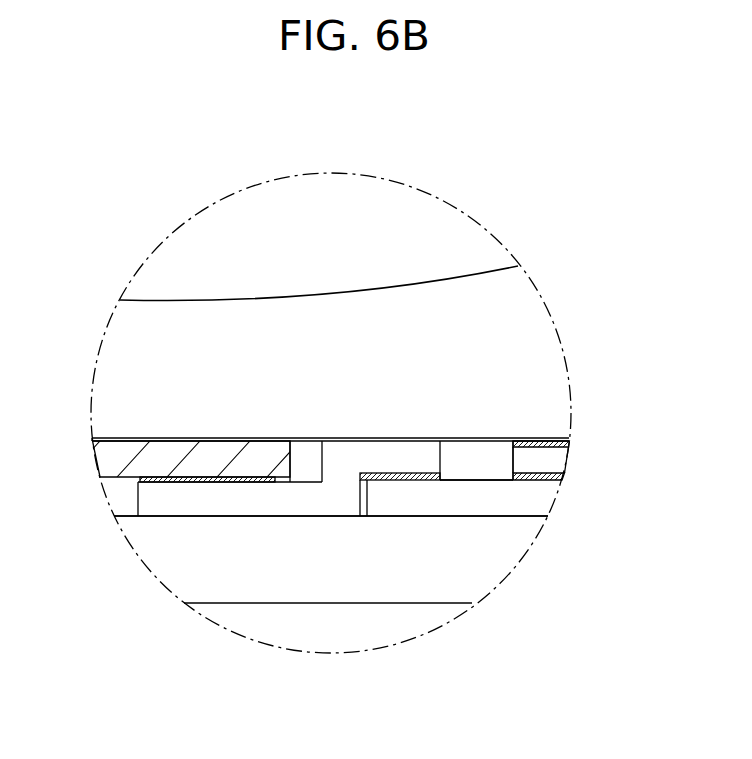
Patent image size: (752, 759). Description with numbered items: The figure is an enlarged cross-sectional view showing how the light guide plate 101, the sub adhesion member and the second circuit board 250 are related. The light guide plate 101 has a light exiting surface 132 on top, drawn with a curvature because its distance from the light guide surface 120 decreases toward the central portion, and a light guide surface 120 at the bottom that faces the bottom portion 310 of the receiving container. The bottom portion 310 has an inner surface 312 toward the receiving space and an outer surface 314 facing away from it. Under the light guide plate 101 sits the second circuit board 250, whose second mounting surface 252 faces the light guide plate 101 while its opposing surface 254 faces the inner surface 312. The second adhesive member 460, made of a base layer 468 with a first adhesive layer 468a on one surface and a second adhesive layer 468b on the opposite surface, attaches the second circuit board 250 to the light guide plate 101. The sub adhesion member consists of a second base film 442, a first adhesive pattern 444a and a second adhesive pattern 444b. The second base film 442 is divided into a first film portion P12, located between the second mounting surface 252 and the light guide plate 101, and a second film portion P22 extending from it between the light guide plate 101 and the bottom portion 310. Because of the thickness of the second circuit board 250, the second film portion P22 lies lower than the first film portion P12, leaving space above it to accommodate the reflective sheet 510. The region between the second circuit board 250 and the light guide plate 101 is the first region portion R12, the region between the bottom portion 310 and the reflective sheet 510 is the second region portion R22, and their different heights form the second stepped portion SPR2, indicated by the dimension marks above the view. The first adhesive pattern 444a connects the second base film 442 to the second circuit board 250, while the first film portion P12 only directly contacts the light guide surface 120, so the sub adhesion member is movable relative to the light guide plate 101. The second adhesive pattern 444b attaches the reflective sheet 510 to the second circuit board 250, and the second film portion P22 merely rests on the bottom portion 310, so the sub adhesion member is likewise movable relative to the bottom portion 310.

The light exiting surface 132 is at (160, 291).
The light guide plate 101 is at (118, 338).
The light guide surface 120 is at (131, 430).
The reflective sheet 510 is at (108, 457).
The second adhesive pattern 444b is at (212, 477).
The first adhesive pattern 444a is at (421, 473).
The first adhesive layer 468a is at (556, 444).
The base layer 468 is at (557, 458).
The second adhesive layer 468b is at (584, 487).
The second adhesive member 460 is at (612, 461).
The second mounting surface 252 is at (488, 485).
The opposing surface 254 is at (540, 512).
The second circuit board 250 is at (403, 524).
The inner surface 312 is at (456, 526).
The outer surface 314 is at (459, 598).
The bottom portion 310 is at (392, 576).
The second film portion P22 is at (262, 498).
The first film portion P12 is at (395, 462).
The second base film 442 is at (328, 598).
The second region portion R22 is at (292, 147).
The second stepped portion SPR2 is at (367, 147).
The first region portion R12 is at (442, 147).